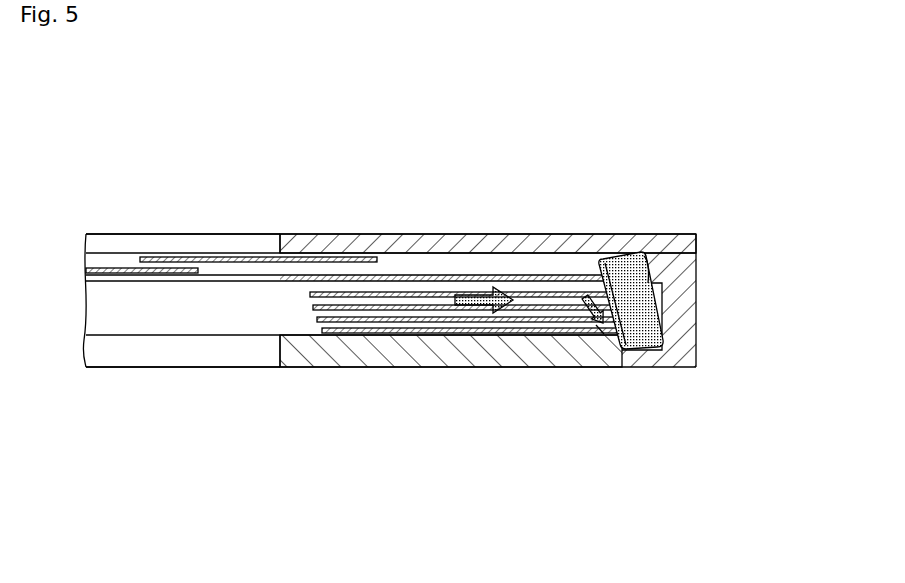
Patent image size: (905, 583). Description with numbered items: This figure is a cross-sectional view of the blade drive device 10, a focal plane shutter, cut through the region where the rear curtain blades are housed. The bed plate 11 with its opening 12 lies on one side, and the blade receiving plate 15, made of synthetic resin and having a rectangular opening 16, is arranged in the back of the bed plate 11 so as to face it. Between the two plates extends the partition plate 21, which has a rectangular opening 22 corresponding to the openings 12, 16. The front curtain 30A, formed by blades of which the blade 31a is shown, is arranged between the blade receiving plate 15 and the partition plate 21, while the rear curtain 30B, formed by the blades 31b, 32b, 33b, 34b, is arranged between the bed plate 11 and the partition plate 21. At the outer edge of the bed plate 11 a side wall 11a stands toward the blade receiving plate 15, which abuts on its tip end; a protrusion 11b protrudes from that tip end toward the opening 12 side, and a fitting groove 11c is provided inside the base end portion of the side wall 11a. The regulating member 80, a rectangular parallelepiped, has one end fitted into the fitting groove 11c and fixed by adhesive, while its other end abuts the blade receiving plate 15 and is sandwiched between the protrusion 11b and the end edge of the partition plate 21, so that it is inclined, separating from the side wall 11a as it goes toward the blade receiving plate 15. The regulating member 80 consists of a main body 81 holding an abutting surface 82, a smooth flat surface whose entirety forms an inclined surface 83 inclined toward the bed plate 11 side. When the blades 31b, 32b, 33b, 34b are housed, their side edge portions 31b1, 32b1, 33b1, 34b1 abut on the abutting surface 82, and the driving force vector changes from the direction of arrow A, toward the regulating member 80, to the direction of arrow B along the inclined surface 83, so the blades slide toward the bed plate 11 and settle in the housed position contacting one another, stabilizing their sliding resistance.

The blade drive device 10 is at (176, 137).
The bed plate 11 is at (353, 355).
The side wall 11a is at (680, 308).
The protrusion 11b is at (653, 250).
The fitting groove 11c is at (663, 325).
The opening 12 is at (275, 350).
The blade receiving plate 15 is at (534, 246).
The opening 16 is at (263, 247).
The partition plate 21 is at (395, 275).
The opening 22 is at (280, 278).
The front curtain 30A is at (276, 210).
The rear curtain 30B is at (463, 407).
The blade 31a is at (328, 260).
The blade 31b is at (512, 476).
The blade 32b is at (417, 321).
The blade 33b is at (450, 309).
The blade 34b is at (517, 296).
The side edge portion 31b1 is at (618, 331).
The side edge portion 32b1 is at (615, 320).
The side edge portion 33b1 is at (612, 308).
The side edge portion 34b1 is at (609, 295).
The regulating member 80 is at (608, 245).
The main body 81 is at (634, 258).
The abutting surface 82 is at (600, 331).
The inclined surface 83 is at (571, 386).
The arrow A is at (476, 289).
The arrow B is at (588, 318).